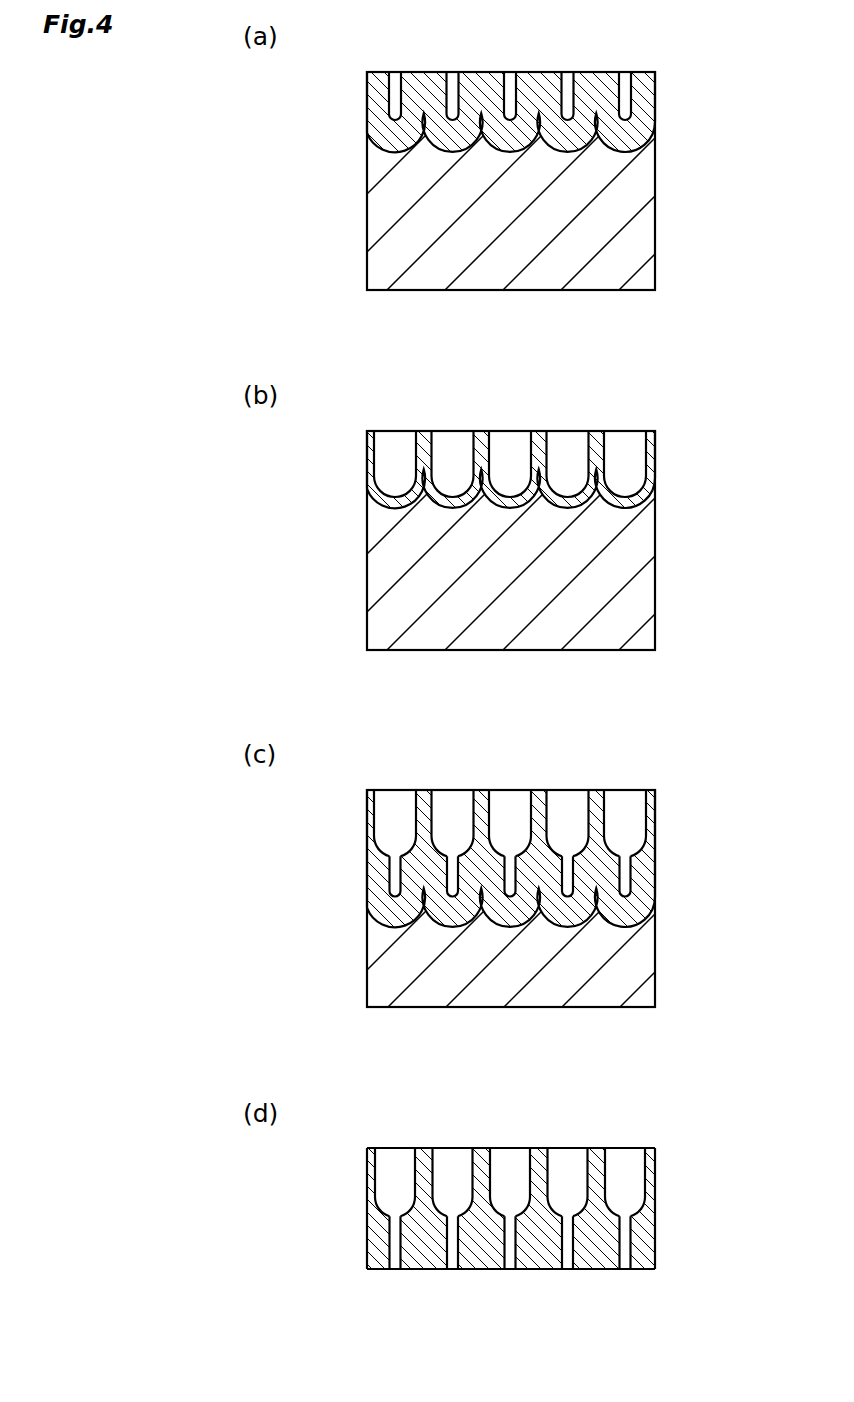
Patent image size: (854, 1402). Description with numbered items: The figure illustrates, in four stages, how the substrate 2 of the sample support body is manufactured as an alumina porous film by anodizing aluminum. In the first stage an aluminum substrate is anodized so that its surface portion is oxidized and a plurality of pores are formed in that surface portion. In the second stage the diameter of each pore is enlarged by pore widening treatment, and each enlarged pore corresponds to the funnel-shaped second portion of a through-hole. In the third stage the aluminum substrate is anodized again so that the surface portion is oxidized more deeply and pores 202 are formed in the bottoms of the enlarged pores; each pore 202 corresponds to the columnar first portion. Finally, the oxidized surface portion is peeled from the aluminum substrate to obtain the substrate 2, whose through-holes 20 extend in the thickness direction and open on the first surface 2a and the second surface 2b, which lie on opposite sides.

The substrate 2 is at (521, 1210).
The first surface 2a is at (377, 1270).
The second surface 2b is at (388, 1148).
The through-hole 20 is at (510, 1210).
The pore 202 is at (510, 956).